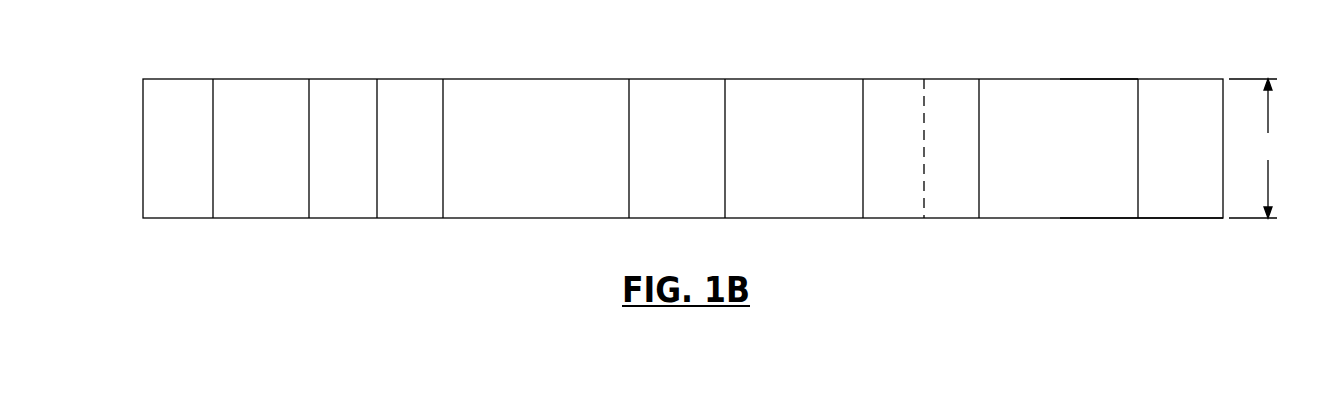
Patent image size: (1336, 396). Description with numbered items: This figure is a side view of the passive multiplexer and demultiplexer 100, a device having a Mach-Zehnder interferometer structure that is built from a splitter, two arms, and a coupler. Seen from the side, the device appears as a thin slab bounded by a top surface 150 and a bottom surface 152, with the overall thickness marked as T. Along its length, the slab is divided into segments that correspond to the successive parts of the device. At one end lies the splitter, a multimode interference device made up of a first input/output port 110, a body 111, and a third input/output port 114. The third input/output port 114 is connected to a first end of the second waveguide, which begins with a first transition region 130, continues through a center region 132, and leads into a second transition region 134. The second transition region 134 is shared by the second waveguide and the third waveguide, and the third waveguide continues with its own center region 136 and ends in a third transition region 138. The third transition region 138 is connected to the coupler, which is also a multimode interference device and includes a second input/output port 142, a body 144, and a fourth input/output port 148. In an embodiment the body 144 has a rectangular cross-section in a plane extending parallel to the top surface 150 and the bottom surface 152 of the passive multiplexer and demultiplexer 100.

The passive multiplexer and demultiplexer 100 is at (1223, 79).
The first input/output port 110 is at (165, 79).
The body 111 is at (260, 79).
The third input/output port 114 is at (342, 218).
The first transition region 130 is at (413, 79).
The center region 132 is at (537, 79).
The second transition region 134 is at (675, 79).
The center region 136 is at (800, 79).
The third transition region 138 is at (891, 79).
The second input/output port 142 is at (952, 218).
The body 144 is at (1058, 79).
The fourth input/output port 148 is at (1175, 218).
The top surface 150 is at (1081, 79).
The bottom surface 152 is at (1082, 218).
The thickness T is at (1253, 148).